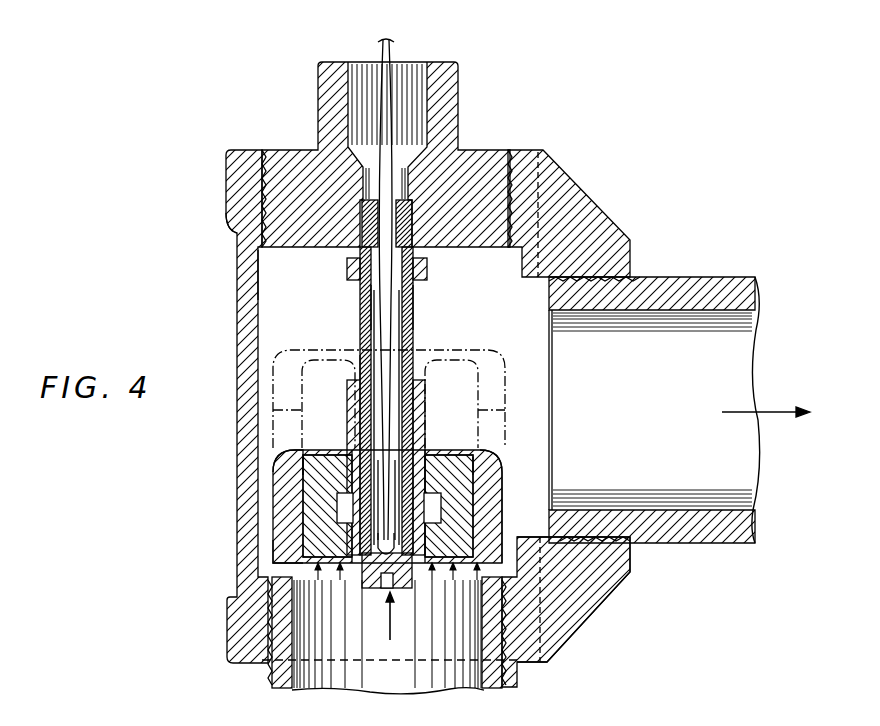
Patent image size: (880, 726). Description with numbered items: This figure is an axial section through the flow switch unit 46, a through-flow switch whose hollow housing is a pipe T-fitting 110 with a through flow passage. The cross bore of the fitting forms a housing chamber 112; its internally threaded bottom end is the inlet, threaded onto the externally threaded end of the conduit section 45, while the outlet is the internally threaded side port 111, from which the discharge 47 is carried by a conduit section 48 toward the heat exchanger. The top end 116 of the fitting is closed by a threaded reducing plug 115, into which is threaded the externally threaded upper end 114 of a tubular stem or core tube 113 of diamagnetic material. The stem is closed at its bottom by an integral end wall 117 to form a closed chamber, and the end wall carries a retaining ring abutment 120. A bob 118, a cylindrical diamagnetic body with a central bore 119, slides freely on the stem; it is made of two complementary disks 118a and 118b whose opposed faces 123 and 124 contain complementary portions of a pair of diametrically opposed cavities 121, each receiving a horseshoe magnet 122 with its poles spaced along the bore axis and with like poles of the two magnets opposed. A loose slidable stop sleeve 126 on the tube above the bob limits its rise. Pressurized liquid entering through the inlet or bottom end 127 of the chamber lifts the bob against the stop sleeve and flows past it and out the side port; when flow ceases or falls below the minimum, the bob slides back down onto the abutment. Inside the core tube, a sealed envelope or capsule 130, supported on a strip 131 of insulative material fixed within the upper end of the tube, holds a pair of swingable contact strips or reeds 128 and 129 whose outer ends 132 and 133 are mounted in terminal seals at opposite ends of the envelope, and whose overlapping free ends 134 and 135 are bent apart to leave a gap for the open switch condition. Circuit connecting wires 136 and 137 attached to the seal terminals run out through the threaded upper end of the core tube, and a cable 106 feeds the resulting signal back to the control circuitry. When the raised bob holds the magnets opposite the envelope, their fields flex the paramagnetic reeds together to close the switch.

The flow switch unit 46 is at (232, 236).
The cable 106 is at (373, 33).
The circuit connecting wire 137 is at (368, 38).
The circuit connecting wire 136 is at (392, 48).
The top end 116 is at (260, 148).
The threaded reducing plug 115 is at (288, 149).
The housing chamber 112 is at (262, 272).
The externally threaded upper end 114 is at (348, 254).
The tubular stem 113 is at (414, 300).
The outer end 133 is at (418, 292).
The sealed envelope 130 is at (362, 312).
The swingable contact strip 129 is at (385, 343).
The stop sleeve 126 is at (428, 377).
The insulative strip 131 is at (360, 366).
The free end 135 is at (414, 396).
The free end 134 is at (400, 410).
The swingable contact strip 128 is at (396, 458).
The complementary disk 118a is at (282, 470).
The cavity 121 is at (305, 477).
The horseshoe magnet 122 is at (316, 493).
The bob 118 is at (266, 513).
The complementary disk 118b is at (278, 543).
The pipe T-fitting 110 is at (245, 565).
The central bore 119 is at (280, 595).
The outer end 132 is at (383, 555).
The retaining ring abutment 120 is at (397, 588).
The end wall 117 is at (388, 628).
The side port 111 is at (653, 280).
The conduit section 48 is at (715, 279).
The opposed face 124 is at (510, 547).
The opposed face 123 is at (556, 480).
The discharge 47 is at (624, 565).
The bottom end 127 is at (508, 607).
The conduit section 45 is at (508, 688).